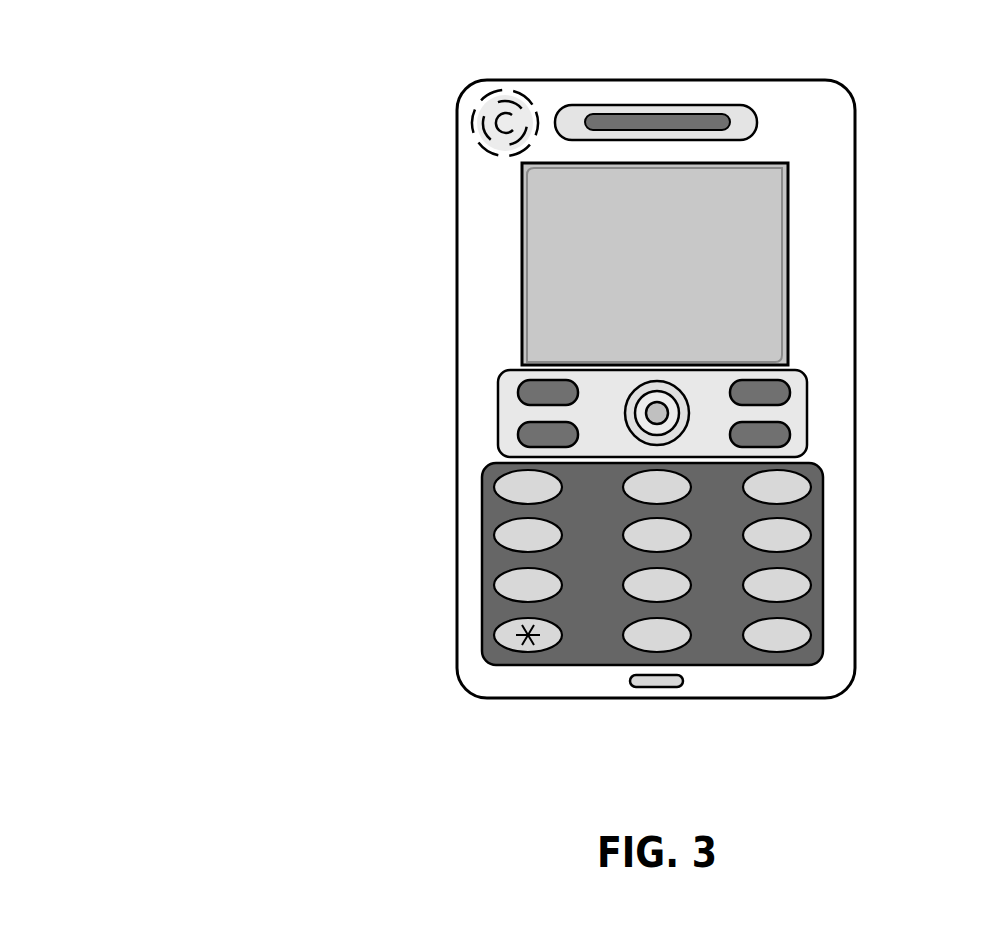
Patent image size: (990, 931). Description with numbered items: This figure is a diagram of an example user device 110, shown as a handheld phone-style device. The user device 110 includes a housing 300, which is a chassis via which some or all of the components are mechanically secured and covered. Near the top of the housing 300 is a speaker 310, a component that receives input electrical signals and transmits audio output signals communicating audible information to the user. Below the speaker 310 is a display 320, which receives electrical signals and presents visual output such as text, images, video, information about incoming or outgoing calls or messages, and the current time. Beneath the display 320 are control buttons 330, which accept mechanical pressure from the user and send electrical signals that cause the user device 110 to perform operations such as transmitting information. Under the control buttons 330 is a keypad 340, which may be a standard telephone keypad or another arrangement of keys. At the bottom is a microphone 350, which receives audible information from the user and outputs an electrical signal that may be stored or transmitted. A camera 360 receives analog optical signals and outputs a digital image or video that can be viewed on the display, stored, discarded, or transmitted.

The user device 110 is at (212, 52).
The housing 300 is at (456, 383).
The speaker 310 is at (655, 103).
The display 320 is at (790, 266).
The control buttons 330 is at (808, 413).
The keypad 340 is at (822, 562).
The microphone 350 is at (660, 688).
The camera 360 is at (515, 98).